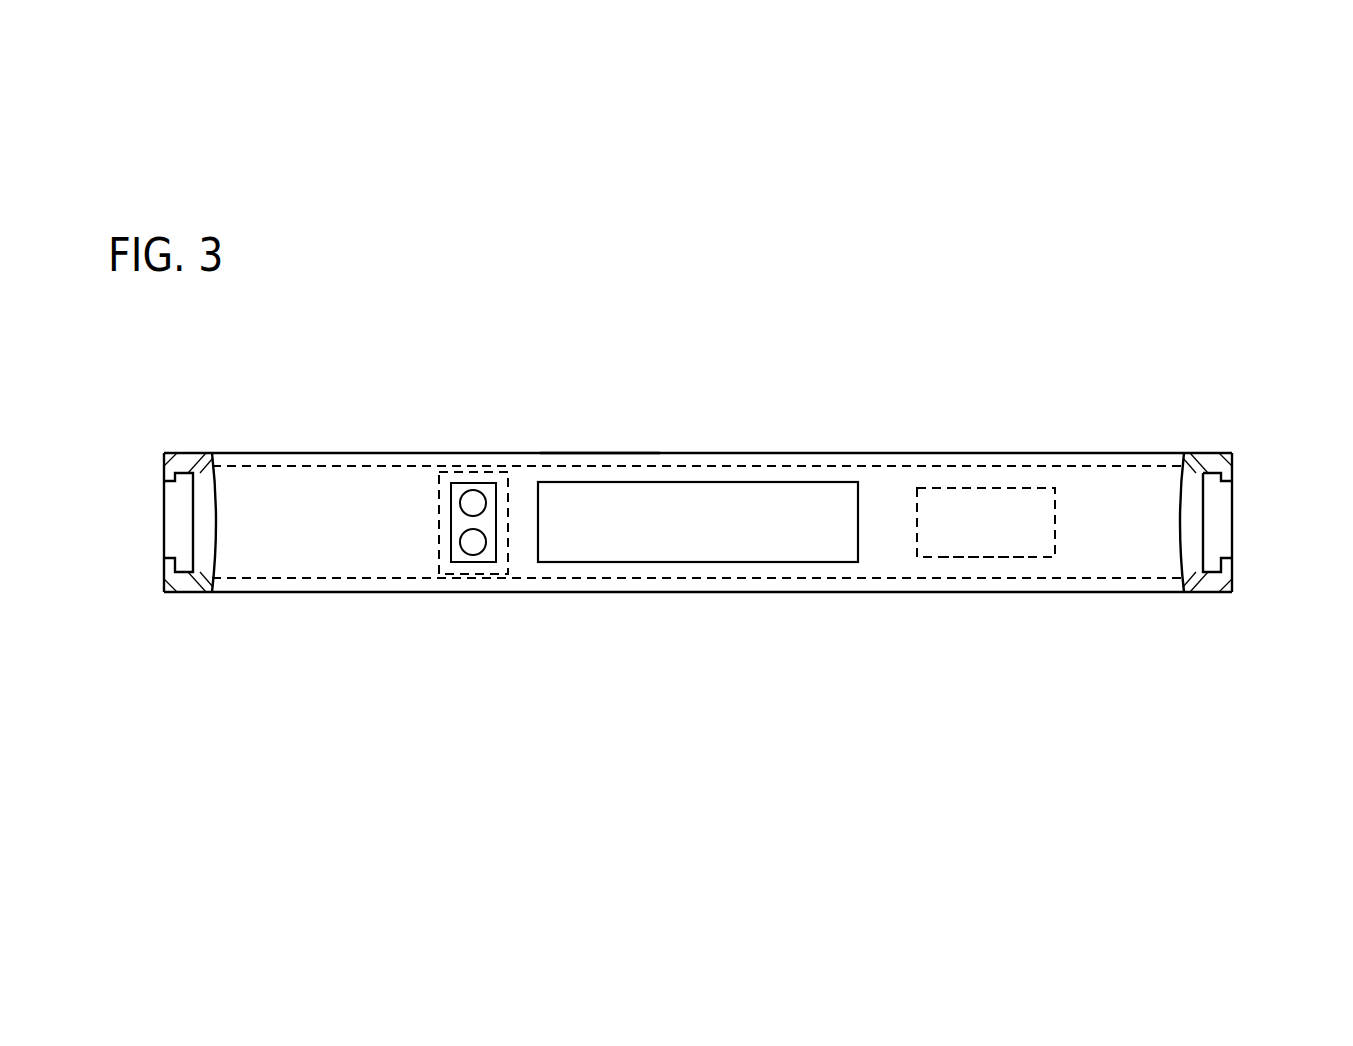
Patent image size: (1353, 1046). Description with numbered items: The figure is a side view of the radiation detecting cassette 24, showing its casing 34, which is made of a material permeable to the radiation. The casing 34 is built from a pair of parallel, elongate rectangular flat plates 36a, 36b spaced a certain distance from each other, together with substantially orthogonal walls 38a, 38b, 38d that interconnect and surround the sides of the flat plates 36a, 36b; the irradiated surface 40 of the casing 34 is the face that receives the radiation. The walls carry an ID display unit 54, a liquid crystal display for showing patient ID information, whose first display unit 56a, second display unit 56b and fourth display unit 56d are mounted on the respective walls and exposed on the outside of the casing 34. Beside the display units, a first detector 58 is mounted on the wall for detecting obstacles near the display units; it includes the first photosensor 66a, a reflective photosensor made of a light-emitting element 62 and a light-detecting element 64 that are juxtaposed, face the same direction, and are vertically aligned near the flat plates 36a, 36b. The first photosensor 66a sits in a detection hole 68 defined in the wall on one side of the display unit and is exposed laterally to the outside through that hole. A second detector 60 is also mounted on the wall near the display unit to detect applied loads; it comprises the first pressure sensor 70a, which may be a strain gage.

The radiation detecting cassette 24 is at (1078, 438).
The casing 34 is at (349, 455).
The flat plate 36a is at (905, 458).
The flat plate 36b is at (893, 580).
The wall 38a is at (1115, 550).
The wall 38b is at (170, 576).
The wall 38d is at (1222, 474).
The irradiated surface 40 is at (600, 453).
The ID display unit 54 is at (668, 480).
The first display unit 56a is at (668, 540).
The second display unit 56b is at (172, 518).
The fourth display unit 56d is at (1225, 528).
The first detector 58 is at (470, 475).
The second detector 60 is at (965, 478).
The light-emitting element 62 is at (461, 503).
The light-detecting element 64 is at (461, 542).
The first photosensor 66a is at (490, 481).
The detection hole 68 is at (480, 562).
The first pressure sensor 70a is at (985, 528).